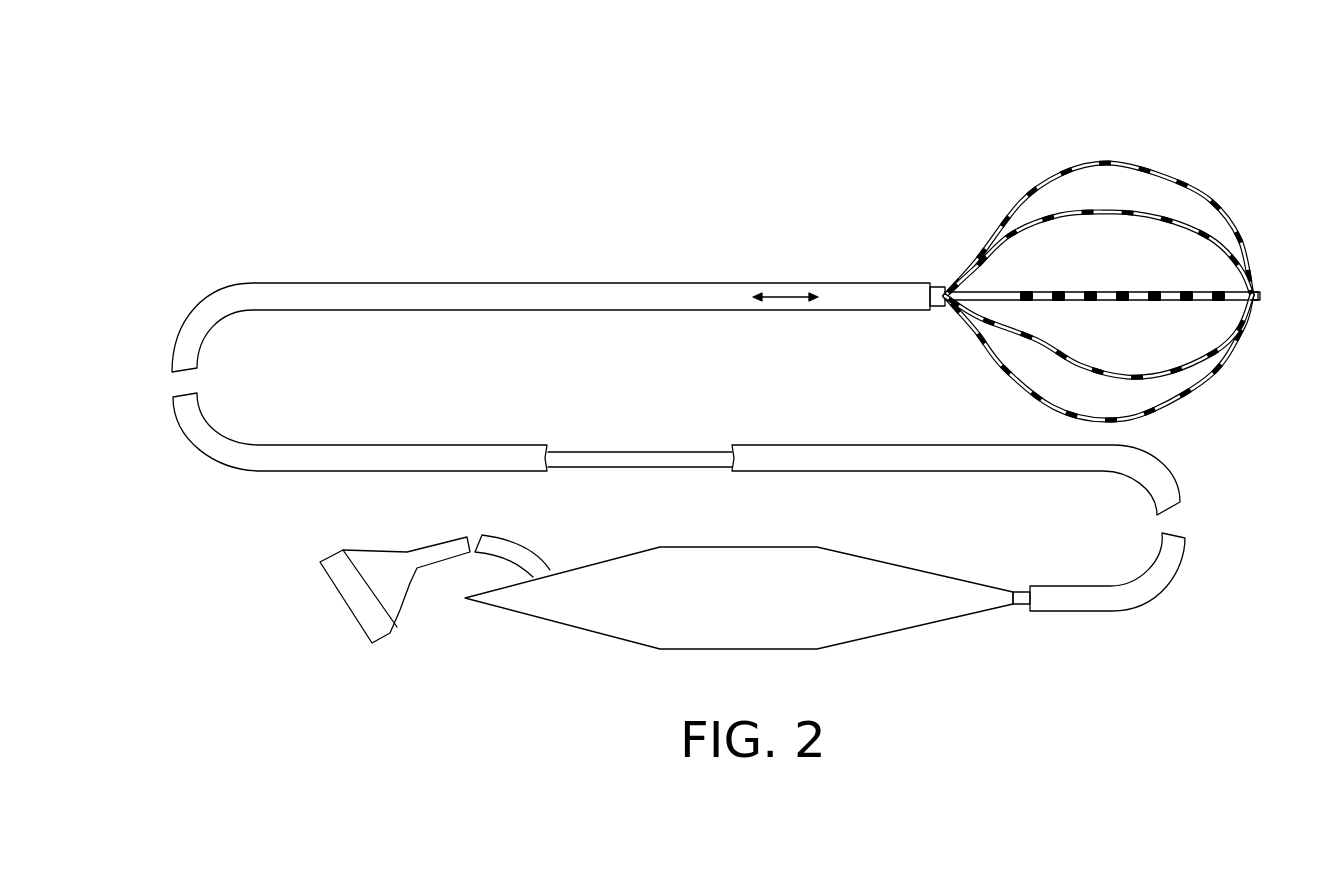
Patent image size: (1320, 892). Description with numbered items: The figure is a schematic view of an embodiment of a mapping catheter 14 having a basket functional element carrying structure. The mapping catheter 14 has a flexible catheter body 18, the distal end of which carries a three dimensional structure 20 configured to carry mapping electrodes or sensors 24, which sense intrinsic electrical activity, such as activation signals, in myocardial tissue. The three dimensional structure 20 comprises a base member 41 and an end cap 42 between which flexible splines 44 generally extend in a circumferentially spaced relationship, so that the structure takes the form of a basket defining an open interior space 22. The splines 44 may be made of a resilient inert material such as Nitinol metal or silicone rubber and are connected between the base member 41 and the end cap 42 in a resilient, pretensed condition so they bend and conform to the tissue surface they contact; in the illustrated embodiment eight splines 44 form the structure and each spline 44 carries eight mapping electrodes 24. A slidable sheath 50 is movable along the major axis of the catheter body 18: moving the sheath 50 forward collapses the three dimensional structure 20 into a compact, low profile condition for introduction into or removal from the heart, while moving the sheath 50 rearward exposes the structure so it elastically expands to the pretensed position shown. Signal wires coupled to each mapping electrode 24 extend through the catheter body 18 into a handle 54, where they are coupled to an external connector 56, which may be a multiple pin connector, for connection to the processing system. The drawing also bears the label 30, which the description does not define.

The mapping catheter 14 is at (648, 182).
The catheter body 18 is at (940, 286).
The three dimensional structure 20 is at (1256, 190).
The open interior space 22 is at (1163, 355).
The mapping electrodes 24 is at (1183, 138).
The electrodes 30 is at (1133, 372).
The base member 41 is at (947, 307).
The end cap 42 is at (1262, 293).
The flexible splines 44 is at (1028, 200).
The slidable sheath 50 is at (797, 283).
The handle 54 is at (903, 567).
The external connector 56 is at (337, 558).